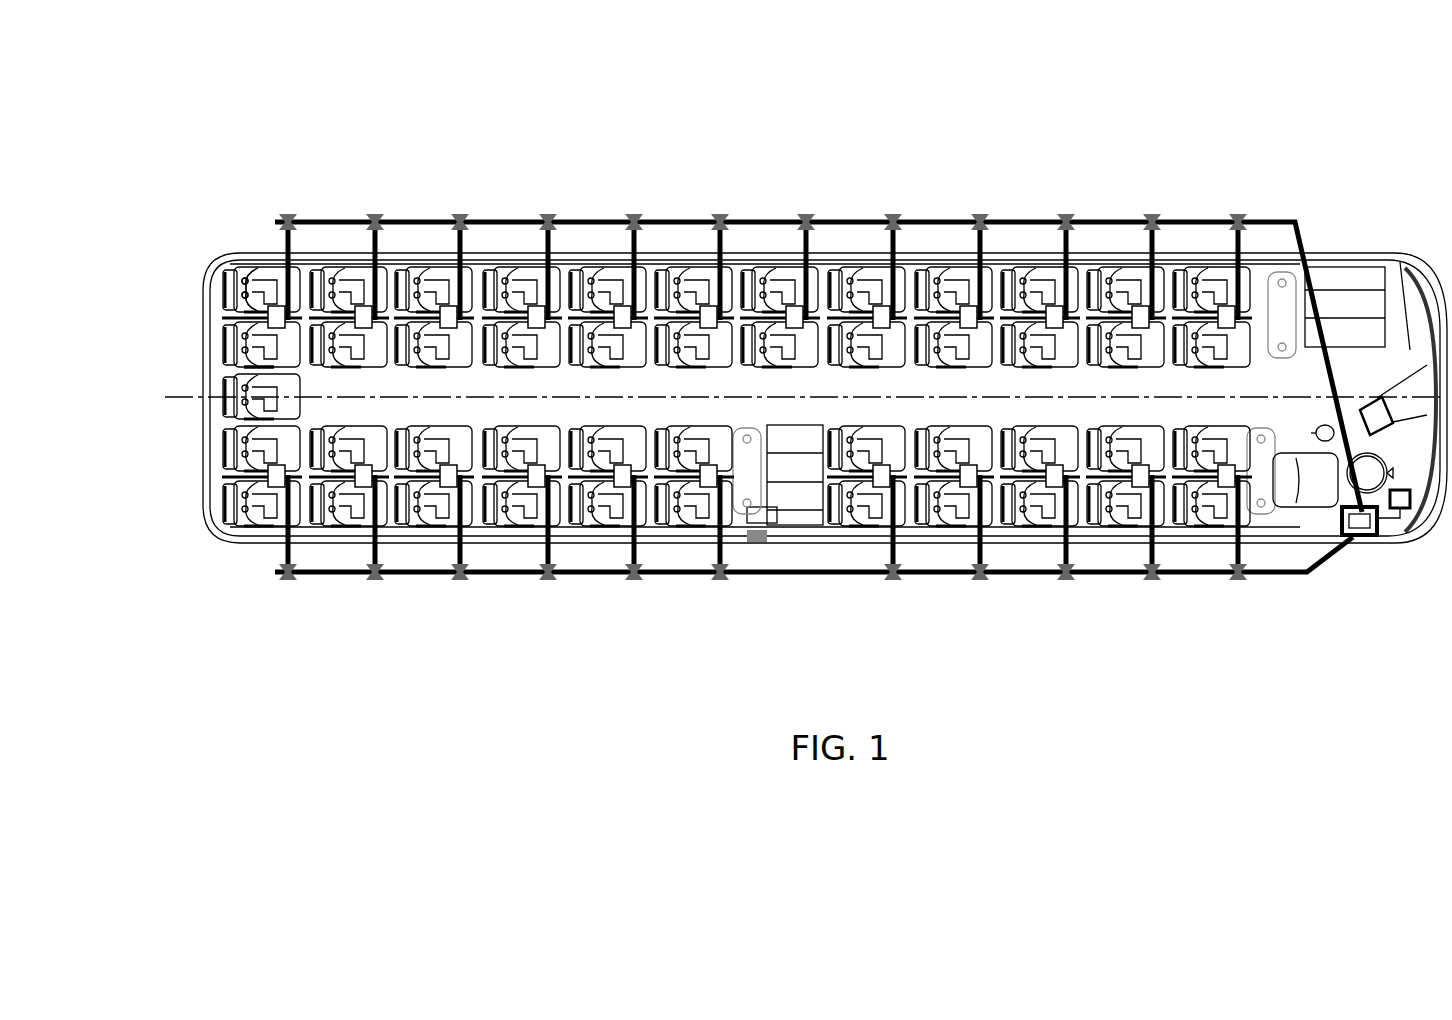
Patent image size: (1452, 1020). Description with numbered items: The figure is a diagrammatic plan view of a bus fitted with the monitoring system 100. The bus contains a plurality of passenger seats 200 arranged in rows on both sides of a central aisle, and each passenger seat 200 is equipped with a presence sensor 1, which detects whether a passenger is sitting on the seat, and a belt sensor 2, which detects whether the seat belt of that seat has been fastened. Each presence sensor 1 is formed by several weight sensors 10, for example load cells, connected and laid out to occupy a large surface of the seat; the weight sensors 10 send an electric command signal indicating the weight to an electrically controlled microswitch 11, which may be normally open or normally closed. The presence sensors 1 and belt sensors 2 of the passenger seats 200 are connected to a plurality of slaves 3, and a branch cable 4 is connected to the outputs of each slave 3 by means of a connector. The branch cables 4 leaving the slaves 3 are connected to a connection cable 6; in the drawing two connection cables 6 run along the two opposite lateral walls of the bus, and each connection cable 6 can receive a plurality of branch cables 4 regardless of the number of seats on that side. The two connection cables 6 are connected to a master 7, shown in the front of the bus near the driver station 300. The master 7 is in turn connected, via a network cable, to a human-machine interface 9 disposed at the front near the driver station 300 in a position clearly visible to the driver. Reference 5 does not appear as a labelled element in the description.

The presence sensor 1 is at (243, 297).
The belt sensor 2 is at (245, 283).
The slave 3 is at (282, 307).
The branch cable 4 is at (288, 547).
The bus nodes 5 is at (804, 214).
The connection cable 6 is at (1016, 218).
The master 7 is at (1362, 528).
The human-machine interface 9 is at (1400, 510).
The weight sensor 10 is at (243, 337).
The microswitch 11 is at (265, 286).
The monitoring system 100 is at (1192, 612).
The passenger seat 200 is at (277, 367).
The driver station 300 is at (1308, 470).